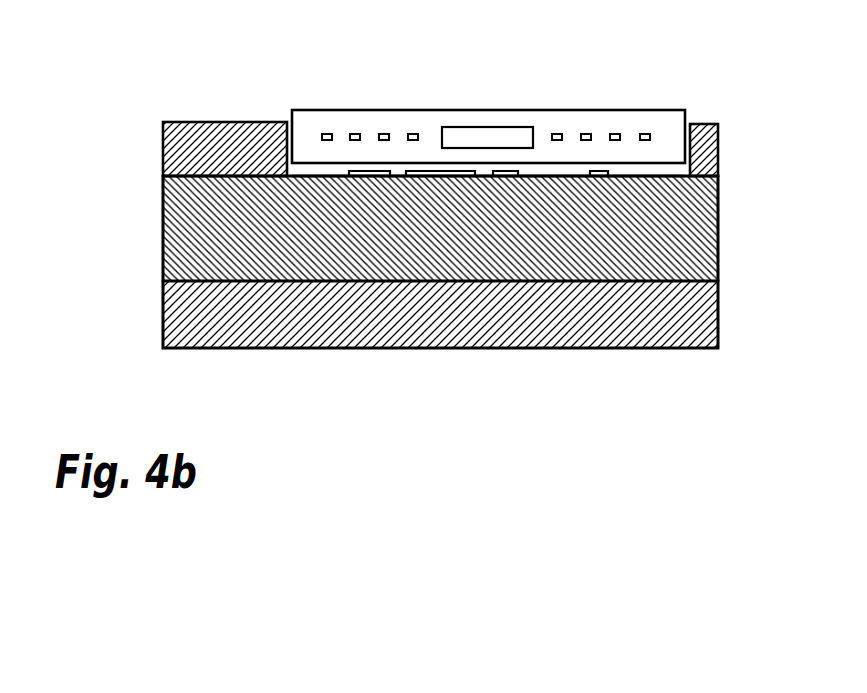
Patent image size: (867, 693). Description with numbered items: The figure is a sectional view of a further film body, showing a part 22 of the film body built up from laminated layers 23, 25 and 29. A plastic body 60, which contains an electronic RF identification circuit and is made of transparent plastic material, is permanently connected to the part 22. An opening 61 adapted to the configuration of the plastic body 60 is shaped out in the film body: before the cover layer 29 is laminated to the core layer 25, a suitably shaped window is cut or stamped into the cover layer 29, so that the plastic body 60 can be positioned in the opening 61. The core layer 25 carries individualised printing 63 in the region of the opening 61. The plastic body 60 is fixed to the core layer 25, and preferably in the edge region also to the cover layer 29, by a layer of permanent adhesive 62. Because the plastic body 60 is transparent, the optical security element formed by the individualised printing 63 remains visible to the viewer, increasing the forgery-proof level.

The part of the film body 22 is at (732, 123).
The laminated layer 23 is at (179, 332).
The core layer 25 is at (179, 258).
The cover layer 29 is at (179, 155).
The plastic body 60 is at (492, 117).
The opening 61 is at (291, 108).
The permanent adhesive 62 is at (312, 172).
The individualised printing 63 is at (378, 175).